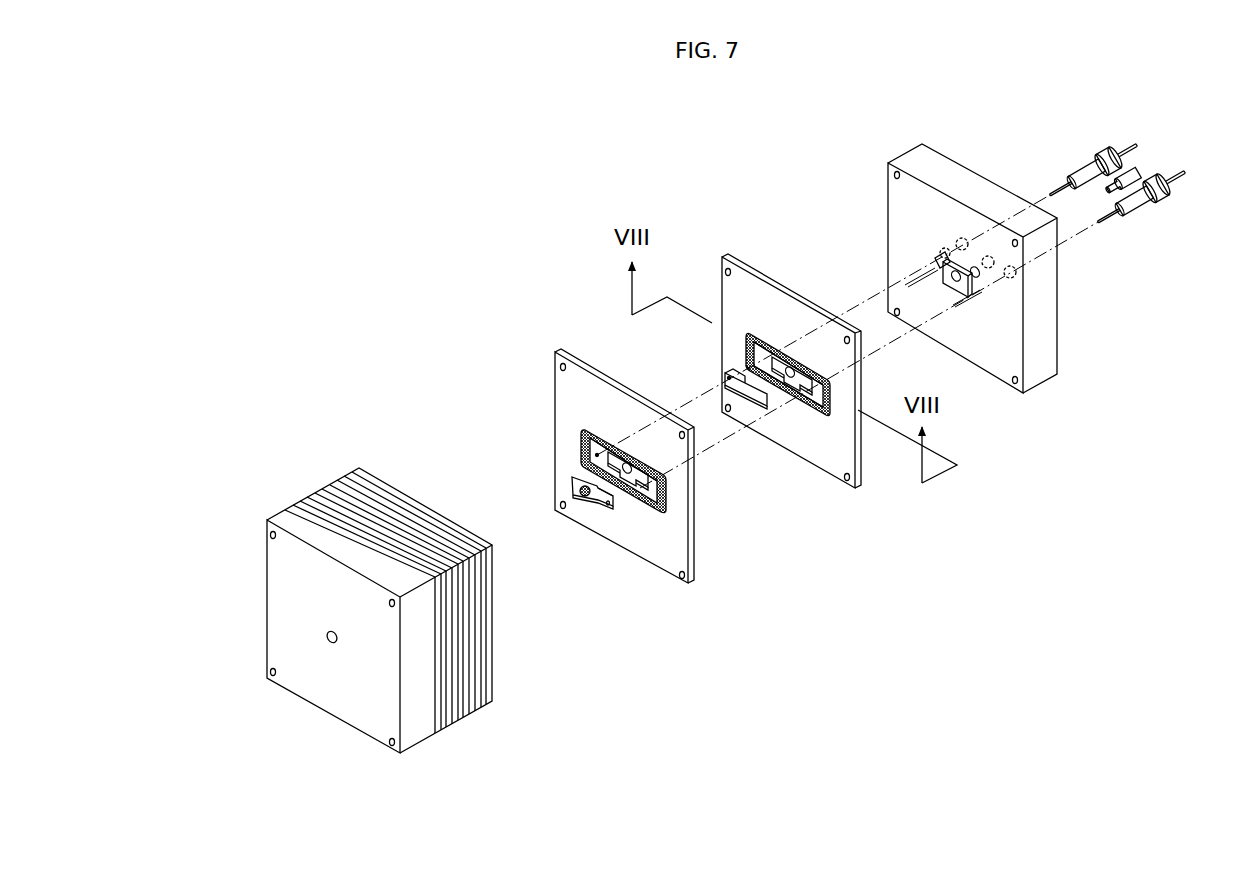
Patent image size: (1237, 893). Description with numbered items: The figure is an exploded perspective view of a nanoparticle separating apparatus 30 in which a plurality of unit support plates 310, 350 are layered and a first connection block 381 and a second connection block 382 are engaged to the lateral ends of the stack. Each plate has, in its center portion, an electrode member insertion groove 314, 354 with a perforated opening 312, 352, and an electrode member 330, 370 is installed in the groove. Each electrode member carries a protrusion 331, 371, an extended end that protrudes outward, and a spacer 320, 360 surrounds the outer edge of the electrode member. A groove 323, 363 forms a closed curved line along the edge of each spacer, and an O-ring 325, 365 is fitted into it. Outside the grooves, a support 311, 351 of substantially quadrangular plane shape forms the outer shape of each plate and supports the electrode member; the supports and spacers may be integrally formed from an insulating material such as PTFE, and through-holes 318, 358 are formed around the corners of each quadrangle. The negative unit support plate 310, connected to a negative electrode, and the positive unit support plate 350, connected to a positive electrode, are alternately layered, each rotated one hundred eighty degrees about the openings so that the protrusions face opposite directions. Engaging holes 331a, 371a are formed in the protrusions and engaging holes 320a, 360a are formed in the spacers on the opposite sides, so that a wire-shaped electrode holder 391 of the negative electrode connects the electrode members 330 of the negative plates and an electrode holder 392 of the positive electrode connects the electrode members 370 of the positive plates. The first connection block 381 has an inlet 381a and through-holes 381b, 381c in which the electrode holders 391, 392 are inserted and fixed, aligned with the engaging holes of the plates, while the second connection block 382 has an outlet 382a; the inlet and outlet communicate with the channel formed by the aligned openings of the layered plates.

The nanoparticle separating apparatus 30 is at (793, 147).
The negative unit support plate 310 is at (814, 294).
The support 311 is at (858, 462).
The perforated opening 312 is at (798, 398).
The electrode member insertion groove 314 is at (794, 378).
The through-hole 318 is at (850, 481).
The spacer 320 is at (773, 349).
The engaging hole 320a is at (762, 355).
The groove 323 is at (748, 352).
The O-ring 325 is at (750, 362).
The electrode member 330 is at (757, 406).
The protrusion 331 is at (737, 388).
The engaging hole 331a is at (728, 378).
The positive unit support plate 350 is at (543, 425).
The support 351 is at (562, 397).
The perforated opening 352 is at (574, 478).
The electrode member insertion groove 354 is at (613, 468).
The through-hole 358 is at (559, 361).
The spacer 360 is at (664, 491).
The engaging hole 360a is at (652, 489).
The groove 363 is at (596, 452).
The O-ring 365 is at (597, 432).
The electrode member 370 is at (586, 499).
The protrusion 371 is at (603, 508).
The engaging hole 371a is at (609, 507).
The first connection block 381 is at (1058, 285).
The inlet 381a is at (947, 285).
The through-hole 381b is at (935, 262).
The through-hole 381c is at (992, 288).
The second connection block 382 is at (283, 519).
The outlet 382a is at (326, 638).
The electrode holder 391 is at (1052, 190).
The electrode holder 392 is at (1118, 214).